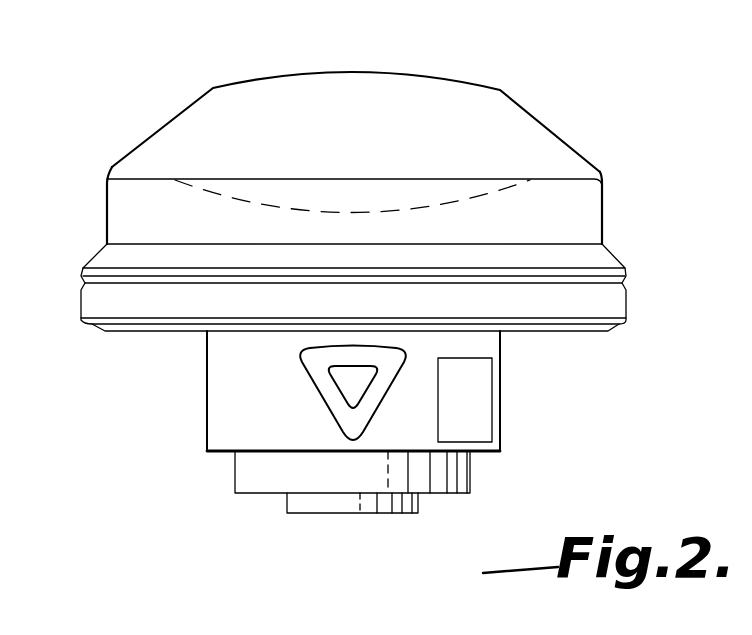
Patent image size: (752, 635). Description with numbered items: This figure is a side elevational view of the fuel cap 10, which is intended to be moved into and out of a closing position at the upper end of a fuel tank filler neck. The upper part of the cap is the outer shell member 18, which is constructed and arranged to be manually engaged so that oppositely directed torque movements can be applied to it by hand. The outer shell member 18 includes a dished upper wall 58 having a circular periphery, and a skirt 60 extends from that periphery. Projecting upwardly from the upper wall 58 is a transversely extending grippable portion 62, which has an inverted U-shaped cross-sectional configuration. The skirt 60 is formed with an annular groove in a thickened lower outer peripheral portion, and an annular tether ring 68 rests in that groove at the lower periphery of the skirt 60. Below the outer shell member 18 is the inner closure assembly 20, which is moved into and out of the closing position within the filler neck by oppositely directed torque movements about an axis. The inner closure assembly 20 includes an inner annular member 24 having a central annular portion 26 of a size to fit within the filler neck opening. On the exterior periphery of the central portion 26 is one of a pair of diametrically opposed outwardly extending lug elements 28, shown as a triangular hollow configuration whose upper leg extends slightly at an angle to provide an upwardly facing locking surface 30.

The fuel cap 10 is at (344, 266).
The outer shell member 18 is at (379, 131).
The inner closure assembly 20 is at (503, 403).
The inner annular member 24 is at (360, 422).
The central annular portion 26 is at (222, 372).
The lug element 28 is at (322, 389).
The locking surface 30 is at (352, 343).
The dished upper wall 58 is at (383, 178).
The skirt 60 is at (590, 230).
The grippable portion 62 is at (410, 52).
The annular tether ring 68 is at (100, 298).